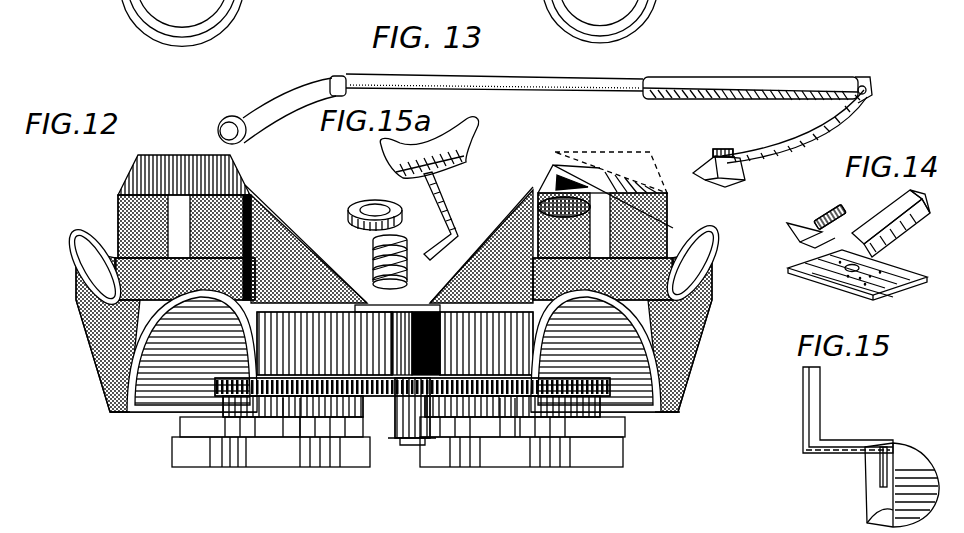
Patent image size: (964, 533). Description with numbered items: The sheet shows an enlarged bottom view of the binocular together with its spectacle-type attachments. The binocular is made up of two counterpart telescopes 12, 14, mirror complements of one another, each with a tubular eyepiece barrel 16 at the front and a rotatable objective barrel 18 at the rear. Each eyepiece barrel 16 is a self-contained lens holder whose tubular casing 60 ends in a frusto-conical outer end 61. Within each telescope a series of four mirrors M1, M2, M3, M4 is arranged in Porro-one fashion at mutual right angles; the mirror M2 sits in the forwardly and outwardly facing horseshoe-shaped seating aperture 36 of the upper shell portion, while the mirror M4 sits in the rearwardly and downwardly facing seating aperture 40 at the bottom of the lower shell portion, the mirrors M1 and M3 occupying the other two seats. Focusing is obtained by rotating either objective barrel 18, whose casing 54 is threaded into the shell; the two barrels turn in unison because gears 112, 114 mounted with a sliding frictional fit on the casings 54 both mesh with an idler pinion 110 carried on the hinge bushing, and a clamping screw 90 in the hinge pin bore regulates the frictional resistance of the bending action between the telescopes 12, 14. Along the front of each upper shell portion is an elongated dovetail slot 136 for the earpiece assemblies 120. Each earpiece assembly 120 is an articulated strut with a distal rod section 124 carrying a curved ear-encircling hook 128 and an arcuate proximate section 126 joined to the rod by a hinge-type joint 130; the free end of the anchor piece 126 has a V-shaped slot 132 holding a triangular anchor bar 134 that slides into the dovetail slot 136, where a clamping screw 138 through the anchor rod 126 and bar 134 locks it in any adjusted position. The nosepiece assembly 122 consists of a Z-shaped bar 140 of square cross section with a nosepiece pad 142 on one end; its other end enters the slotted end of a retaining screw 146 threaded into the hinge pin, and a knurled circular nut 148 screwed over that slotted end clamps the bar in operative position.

In FIG. 12, the telescope 12 is at (320, 358).
In FIG. 12, the telescope 14 is at (500, 358).
In FIG. 12, the eyepiece barrel 16 is at (111, 216).
In FIG. 12, the objective barrel 18 is at (163, 459).
In FIG. 12, the seating aperture 36 is at (88, 288).
In FIG. 12, the seating aperture 40 is at (112, 390).
In FIG. 12, the casing 54 is at (283, 412).
In FIG. 12, the tubular casing 60 is at (118, 198).
In FIG. 12, the frusto-conical outer end 61 is at (125, 183).
In FIG. 12, the clamping screw 90 is at (408, 436).
In FIG. 12, the idler pinion 110 is at (372, 468).
In FIG. 12, the gear 112 is at (262, 400).
In FIG. 12, the gear 114 is at (525, 397).
In FIG. 13, the earpiece assembly 120 is at (759, 69).
In FIG. 14, the earpiece assembly 120 is at (806, 291).
In FIG. 15a, the nosepiece assembly 122 is at (342, 205).
In FIG. 15, the nosepiece assembly 122 is at (921, 436).
In FIG. 13, the distal rod section 124 is at (553, 77).
In FIG. 13, the proximate section 126 is at (808, 142).
In FIG. 14, the proximate section 126 is at (910, 237).
In FIG. 13, the ear-encircling hook 128 is at (307, 72).
In FIG. 13, the hinge-type joint 130 is at (867, 92).
In FIG. 14, the V-shaped slot 132 is at (807, 235).
In FIG. 13, the anchor bar 134 is at (720, 177).
In FIG. 14, the anchor bar 134 is at (890, 287).
In FIG. 12, the dovetail slot 136 is at (573, 173).
In FIG. 13, the clamping screw 138 is at (723, 147).
In FIG. 14, the clamping screw 138 is at (832, 210).
In FIG. 15a, the Z-shaped bar 140 is at (447, 197).
In FIG. 15, the Z-shaped bar 140 is at (813, 410).
In FIG. 15, the nosepiece pad 142 is at (865, 497).
In FIG. 15a, the retaining screw 146 is at (372, 250).
In FIG. 15a, the knurled circular nut 148 is at (348, 216).
In FIG. 12, the mirror M1 is at (327, 223).
In FIG. 12, the mirror M2 is at (97, 252).
In FIG. 12, the mirror M3 is at (92, 353).
In FIG. 12, the mirror M4 is at (157, 402).